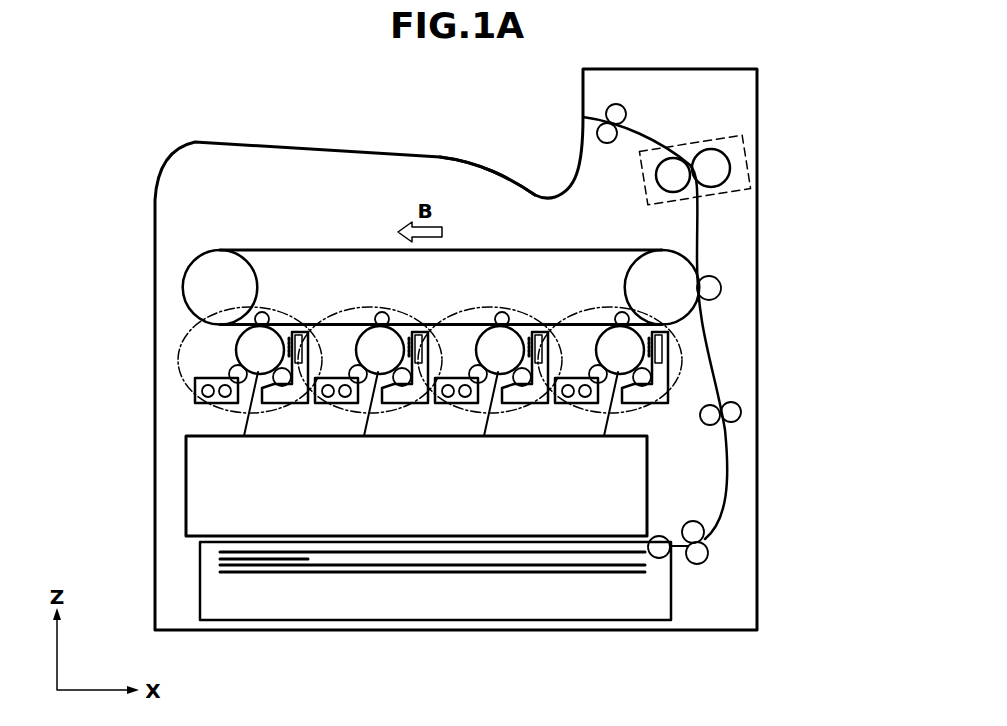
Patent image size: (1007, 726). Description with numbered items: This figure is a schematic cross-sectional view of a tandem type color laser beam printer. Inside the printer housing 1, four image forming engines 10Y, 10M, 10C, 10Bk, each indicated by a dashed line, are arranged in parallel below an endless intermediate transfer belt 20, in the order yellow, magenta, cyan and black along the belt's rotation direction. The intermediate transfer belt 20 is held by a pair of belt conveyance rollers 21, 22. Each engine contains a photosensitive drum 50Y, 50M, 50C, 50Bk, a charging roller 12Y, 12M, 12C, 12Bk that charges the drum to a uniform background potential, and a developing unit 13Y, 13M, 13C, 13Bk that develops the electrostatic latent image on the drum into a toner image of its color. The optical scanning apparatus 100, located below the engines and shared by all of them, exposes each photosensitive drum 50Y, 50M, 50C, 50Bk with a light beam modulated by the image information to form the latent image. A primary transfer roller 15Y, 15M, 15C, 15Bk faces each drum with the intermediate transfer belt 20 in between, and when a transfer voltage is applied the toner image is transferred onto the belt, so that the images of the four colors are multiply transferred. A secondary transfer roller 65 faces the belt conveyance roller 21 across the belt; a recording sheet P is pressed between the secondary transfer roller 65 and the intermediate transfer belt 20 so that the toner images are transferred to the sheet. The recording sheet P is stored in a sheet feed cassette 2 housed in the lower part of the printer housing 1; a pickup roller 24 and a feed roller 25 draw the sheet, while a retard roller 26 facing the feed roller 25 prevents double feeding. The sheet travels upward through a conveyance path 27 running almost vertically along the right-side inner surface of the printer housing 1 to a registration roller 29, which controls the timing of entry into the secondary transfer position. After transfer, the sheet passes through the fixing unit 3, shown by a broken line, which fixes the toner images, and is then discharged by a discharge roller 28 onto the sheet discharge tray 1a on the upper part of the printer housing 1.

The printer housing 1 is at (162, 338).
The sheet discharge tray 1a is at (473, 160).
The sheet feed cassette 2 is at (662, 620).
The fixing unit 3 is at (742, 140).
The image forming engine for yellow 10Y is at (199, 340).
The image forming engine for magenta 10M is at (370, 340).
The image forming engine for cyan 10C is at (490, 345).
The image forming engine for black 10Bk is at (692, 333).
The charging roller 12Y is at (294, 405).
The charging roller 12M is at (412, 405).
The charging roller 12C is at (532, 405).
The charging roller 12Bk is at (645, 378).
The developing unit 13Y is at (198, 390).
The developing unit 13M is at (318, 380).
The developing unit 13C is at (440, 380).
The developing unit 13Bk is at (558, 380).
The primary transfer roller 15Y is at (262, 312).
The primary transfer roller 15M is at (382, 312).
The primary transfer roller 15C is at (500, 312).
The primary transfer roller 15Bk is at (620, 312).
The intermediate transfer belt 20 is at (300, 250).
The belt conveyance roller 21 is at (668, 265).
The belt conveyance roller 22 is at (218, 262).
The pickup roller 24 is at (656, 558).
The feed roller 25 is at (704, 532).
The retard roller 26 is at (708, 553).
The conveyance path 27 is at (700, 213).
The discharge roller 28 is at (616, 104).
The registration roller 29 is at (741, 412).
The photosensitive drum 50Y is at (243, 345).
The photosensitive drum 50M is at (392, 342).
The photosensitive drum 50C is at (505, 342).
The photosensitive drum 50Bk is at (632, 350).
The secondary transfer roller 65 is at (721, 288).
The optical scanning apparatus 100 is at (660, 473).
The recording sheet P is at (538, 575).